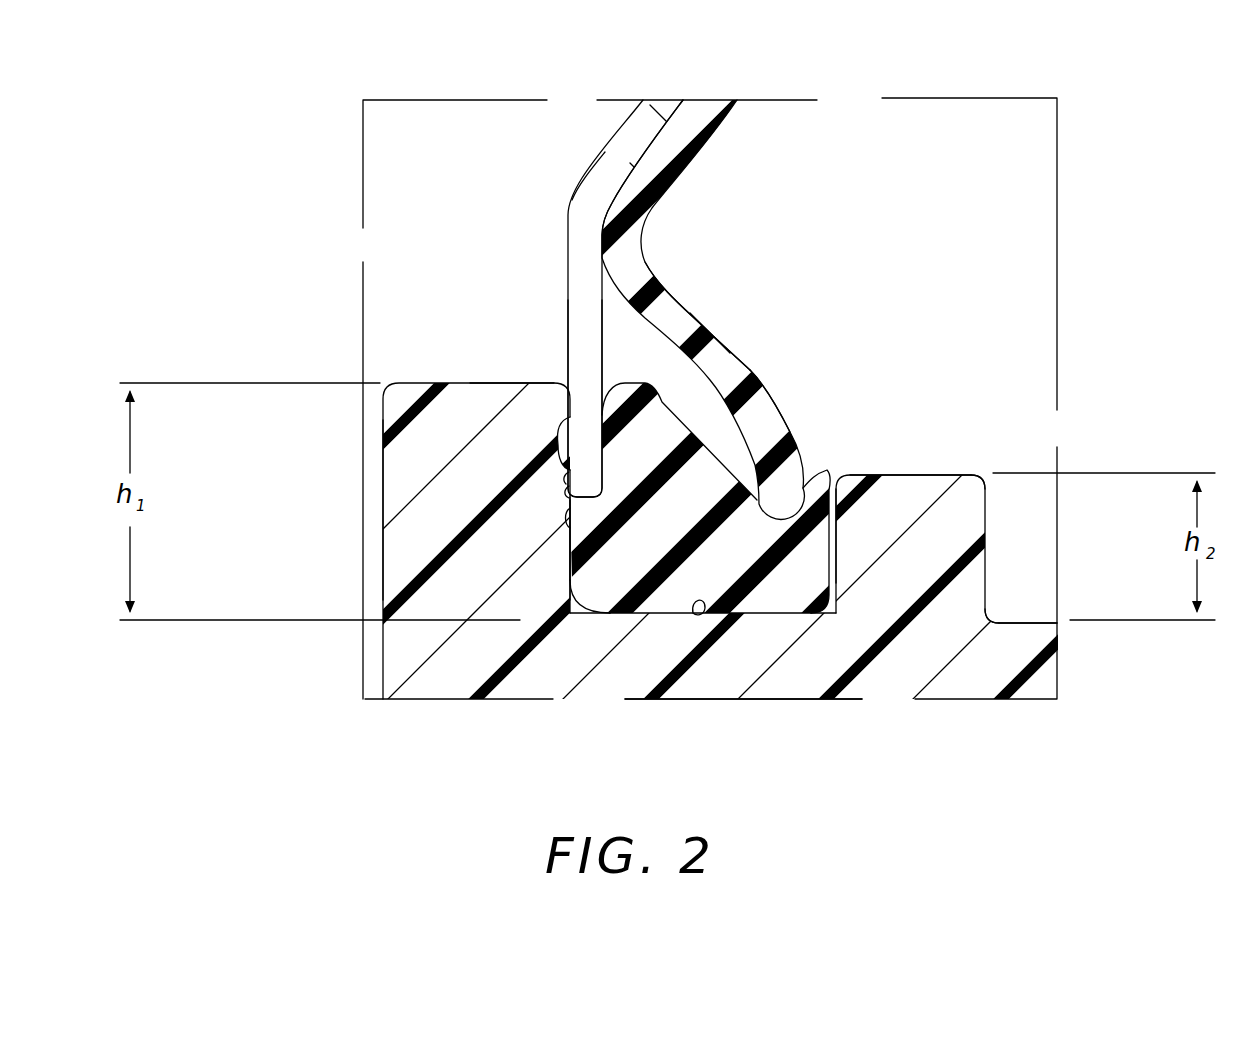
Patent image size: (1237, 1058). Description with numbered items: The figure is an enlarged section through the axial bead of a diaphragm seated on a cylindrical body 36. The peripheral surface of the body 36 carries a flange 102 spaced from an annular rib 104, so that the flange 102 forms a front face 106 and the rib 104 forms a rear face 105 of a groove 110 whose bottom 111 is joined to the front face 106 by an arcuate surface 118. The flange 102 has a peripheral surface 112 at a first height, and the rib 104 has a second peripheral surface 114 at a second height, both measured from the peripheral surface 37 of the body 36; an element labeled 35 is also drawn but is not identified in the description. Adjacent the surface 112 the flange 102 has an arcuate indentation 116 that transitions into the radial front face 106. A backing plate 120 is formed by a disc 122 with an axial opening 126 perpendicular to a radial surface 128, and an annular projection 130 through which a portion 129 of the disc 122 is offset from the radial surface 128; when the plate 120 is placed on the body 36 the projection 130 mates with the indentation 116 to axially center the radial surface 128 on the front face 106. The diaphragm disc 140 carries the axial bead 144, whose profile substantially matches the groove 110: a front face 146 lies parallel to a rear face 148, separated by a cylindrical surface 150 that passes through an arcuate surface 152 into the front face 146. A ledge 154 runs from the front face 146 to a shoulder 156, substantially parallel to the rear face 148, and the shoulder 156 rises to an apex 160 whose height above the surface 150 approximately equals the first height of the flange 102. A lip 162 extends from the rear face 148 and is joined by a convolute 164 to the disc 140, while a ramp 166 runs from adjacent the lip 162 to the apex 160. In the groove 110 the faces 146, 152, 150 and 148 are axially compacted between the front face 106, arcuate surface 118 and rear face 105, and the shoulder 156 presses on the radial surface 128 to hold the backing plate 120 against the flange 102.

The mounting surface 35 is at (368, 410).
The cylindrical body 36 is at (1017, 637).
The peripheral surface of the cylindrical body 37 is at (1035, 620).
The flange 102 is at (468, 383).
The annular rib 104 is at (975, 478).
The rear face 105 is at (983, 513).
The front face 106 is at (578, 580).
The groove 110 is at (657, 620).
The bottom of groove 111 is at (777, 620).
The peripheral surface of the flange 112 is at (497, 380).
The second peripheral surface 114 is at (962, 490).
The arcuate indentation 116 is at (560, 465).
The arcuate surface 118 is at (567, 600).
The backing plate 120 is at (608, 403).
The disc 122 is at (663, 108).
The axial opening 126 is at (565, 482).
The radial surface 128 is at (563, 470).
The portion of the disc 129 is at (565, 262).
The annular projection 130 is at (562, 385).
The disc 140 is at (705, 108).
The axial bead 144 is at (585, 610).
The front face 146 is at (563, 512).
The rear face 148 is at (836, 555).
The cylindrical axial bead surface 150 is at (700, 613).
The arcuate surface 152 is at (560, 635).
The ledge 154 is at (737, 380).
The shoulder 156 is at (697, 320).
The apex 160 is at (686, 315).
The lip 162 is at (830, 468).
The convolute 164 is at (738, 375).
The ramp 166 is at (675, 437).